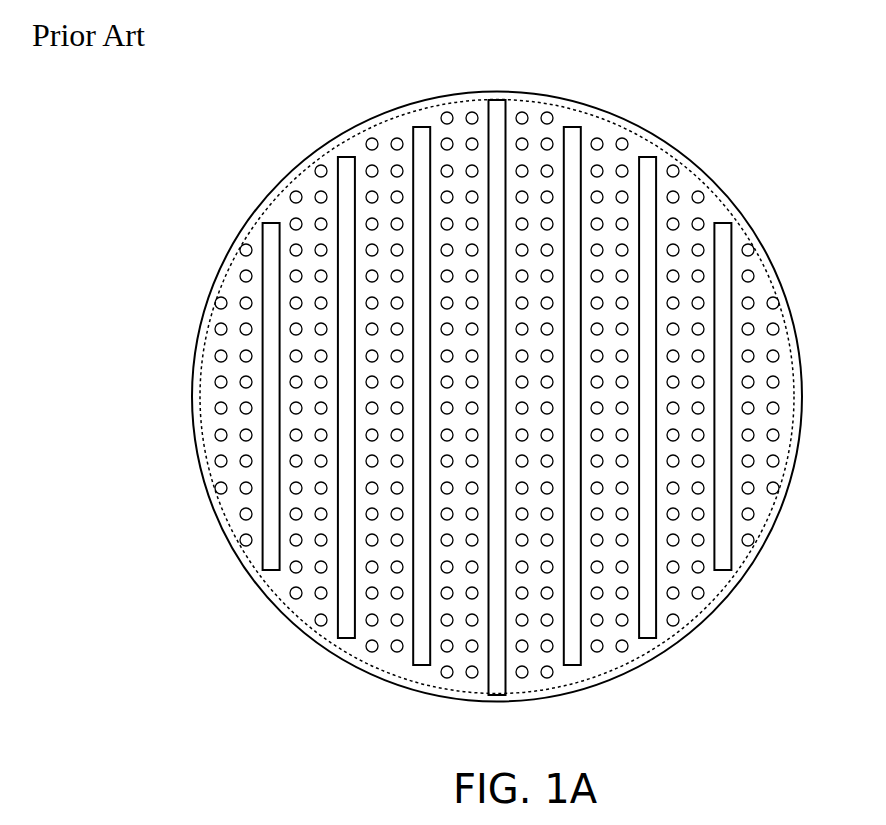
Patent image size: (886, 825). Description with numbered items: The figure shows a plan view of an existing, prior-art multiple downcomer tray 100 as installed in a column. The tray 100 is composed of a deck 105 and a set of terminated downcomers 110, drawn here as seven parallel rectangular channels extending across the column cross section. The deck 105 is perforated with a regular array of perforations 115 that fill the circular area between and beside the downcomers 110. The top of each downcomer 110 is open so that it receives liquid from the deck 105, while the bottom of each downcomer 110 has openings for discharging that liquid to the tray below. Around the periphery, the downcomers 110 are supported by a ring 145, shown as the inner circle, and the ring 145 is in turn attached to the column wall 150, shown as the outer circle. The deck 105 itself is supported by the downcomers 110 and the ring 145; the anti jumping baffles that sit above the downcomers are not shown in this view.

The multiple downcomer tray 100 is at (246, 120).
The deck 105 is at (233, 283).
The terminated downcomers 110 is at (262, 223).
The perforations 115 is at (220, 325).
The ring 145 is at (743, 225).
The column wall 150 is at (763, 250).